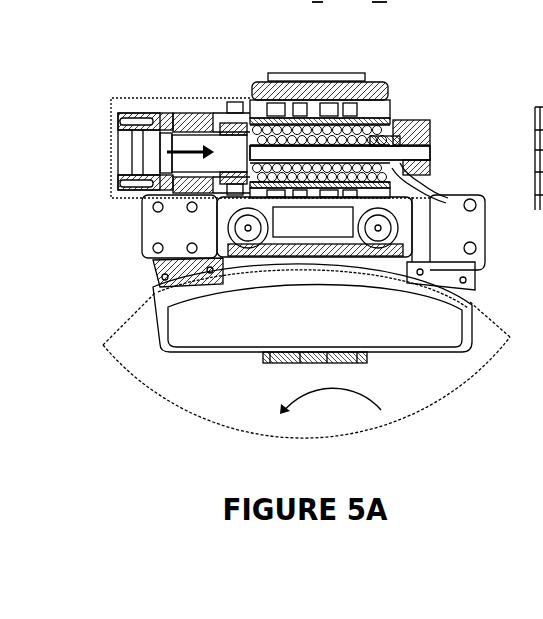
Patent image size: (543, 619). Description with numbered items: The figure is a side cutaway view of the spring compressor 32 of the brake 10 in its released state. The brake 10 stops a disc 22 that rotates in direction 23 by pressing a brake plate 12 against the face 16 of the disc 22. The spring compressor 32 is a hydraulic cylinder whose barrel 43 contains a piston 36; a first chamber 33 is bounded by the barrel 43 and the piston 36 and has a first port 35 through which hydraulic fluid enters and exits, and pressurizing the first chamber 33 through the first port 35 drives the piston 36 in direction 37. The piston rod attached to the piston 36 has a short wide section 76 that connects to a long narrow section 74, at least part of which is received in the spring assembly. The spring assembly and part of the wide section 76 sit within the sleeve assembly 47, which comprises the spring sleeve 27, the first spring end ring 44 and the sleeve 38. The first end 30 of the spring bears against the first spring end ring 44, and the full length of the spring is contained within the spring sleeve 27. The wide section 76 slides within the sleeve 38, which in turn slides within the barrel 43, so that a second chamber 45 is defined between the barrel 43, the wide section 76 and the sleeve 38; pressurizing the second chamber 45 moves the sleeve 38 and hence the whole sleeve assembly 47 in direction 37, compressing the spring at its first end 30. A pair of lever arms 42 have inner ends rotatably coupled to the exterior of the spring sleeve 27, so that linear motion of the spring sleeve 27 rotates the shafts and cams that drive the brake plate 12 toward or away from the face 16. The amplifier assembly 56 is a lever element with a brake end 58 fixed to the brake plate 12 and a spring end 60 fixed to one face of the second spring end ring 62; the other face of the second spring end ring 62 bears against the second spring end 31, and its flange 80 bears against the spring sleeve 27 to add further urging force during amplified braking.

The brake 10 is at (98, 64).
The brake plate 12 is at (295, 327).
The face 16 is at (212, 397).
The disc 22 is at (182, 419).
The direction 23 is at (333, 388).
The spring sleeve 27 is at (388, 118).
The first end 30 is at (258, 183).
The second spring end 31 is at (425, 160).
The spring compressor 32 is at (145, 98).
The first chamber 33 is at (130, 145).
The first port 35 is at (134, 153).
The piston 36 is at (158, 157).
The direction 37 is at (184, 152).
The sleeve 38 is at (246, 128).
The lever arms 42 is at (310, 100).
The barrel 43 is at (164, 112).
The first spring end ring 44 is at (300, 108).
The second chamber 45 is at (235, 132).
The sleeve assembly 47 is at (228, 197).
The amplifier assembly 56 is at (462, 232).
The brake end 58 is at (478, 281).
The spring end 60 is at (400, 178).
The second spring end ring 62 is at (447, 203).
The narrow section 74 is at (391, 6).
The wide section 76 is at (307, 6).
The flange 80 is at (398, 128).